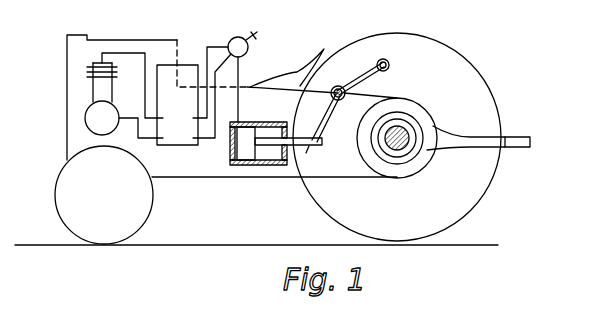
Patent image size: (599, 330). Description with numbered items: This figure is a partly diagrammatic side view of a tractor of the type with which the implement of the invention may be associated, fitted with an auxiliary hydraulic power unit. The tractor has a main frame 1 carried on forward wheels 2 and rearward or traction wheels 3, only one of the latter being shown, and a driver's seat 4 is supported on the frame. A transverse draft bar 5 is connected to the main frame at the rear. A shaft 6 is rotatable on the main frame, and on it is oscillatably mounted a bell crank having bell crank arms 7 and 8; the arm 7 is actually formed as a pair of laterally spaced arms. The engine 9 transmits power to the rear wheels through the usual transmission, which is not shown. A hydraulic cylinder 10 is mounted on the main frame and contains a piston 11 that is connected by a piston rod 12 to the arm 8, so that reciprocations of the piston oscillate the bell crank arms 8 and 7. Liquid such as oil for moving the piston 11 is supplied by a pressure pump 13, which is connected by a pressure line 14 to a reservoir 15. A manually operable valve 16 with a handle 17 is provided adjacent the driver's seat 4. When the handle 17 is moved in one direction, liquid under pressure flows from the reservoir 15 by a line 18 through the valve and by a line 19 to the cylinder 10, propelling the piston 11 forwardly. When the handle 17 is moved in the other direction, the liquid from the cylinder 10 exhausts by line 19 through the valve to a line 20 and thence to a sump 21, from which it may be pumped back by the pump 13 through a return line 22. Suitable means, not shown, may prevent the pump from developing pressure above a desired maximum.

The main frame 1 is at (193, 179).
The forward wheels 2 is at (143, 215).
The rearward or traction wheels 3 is at (470, 206).
The driver's seat 4 is at (307, 68).
The transverse draft bar 5 is at (530, 147).
The shaft 6 is at (340, 101).
The bell crank arm 7 is at (373, 78).
The bell crank arm 8 is at (321, 127).
The engine 9 is at (75, 88).
The hydraulic cylinder 10 is at (275, 121).
The piston 11 is at (250, 152).
The piston rod 12 is at (312, 136).
The pressure pump 13 is at (112, 96).
The pressure line 14 is at (114, 66).
The reservoir 15 is at (157, 108).
The manually operable valve 16 is at (248, 48).
The handle 17 is at (257, 32).
The line 18 is at (223, 45).
The line 19 is at (238, 100).
The line 20 is at (212, 108).
The sump 21 is at (177, 136).
The return line 22 is at (137, 135).